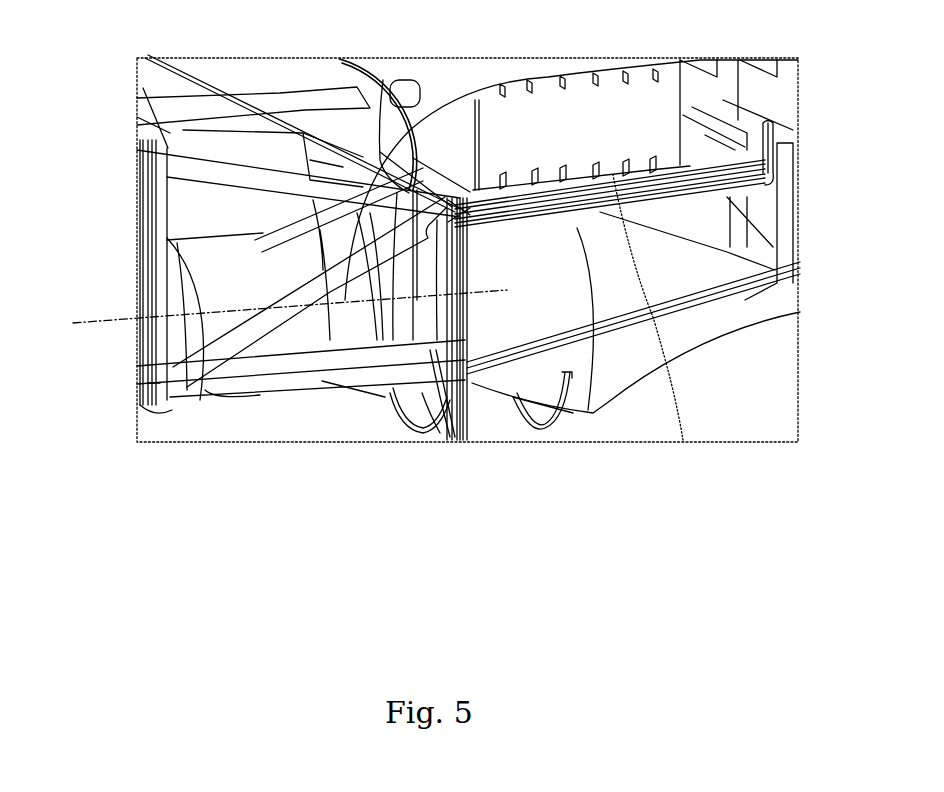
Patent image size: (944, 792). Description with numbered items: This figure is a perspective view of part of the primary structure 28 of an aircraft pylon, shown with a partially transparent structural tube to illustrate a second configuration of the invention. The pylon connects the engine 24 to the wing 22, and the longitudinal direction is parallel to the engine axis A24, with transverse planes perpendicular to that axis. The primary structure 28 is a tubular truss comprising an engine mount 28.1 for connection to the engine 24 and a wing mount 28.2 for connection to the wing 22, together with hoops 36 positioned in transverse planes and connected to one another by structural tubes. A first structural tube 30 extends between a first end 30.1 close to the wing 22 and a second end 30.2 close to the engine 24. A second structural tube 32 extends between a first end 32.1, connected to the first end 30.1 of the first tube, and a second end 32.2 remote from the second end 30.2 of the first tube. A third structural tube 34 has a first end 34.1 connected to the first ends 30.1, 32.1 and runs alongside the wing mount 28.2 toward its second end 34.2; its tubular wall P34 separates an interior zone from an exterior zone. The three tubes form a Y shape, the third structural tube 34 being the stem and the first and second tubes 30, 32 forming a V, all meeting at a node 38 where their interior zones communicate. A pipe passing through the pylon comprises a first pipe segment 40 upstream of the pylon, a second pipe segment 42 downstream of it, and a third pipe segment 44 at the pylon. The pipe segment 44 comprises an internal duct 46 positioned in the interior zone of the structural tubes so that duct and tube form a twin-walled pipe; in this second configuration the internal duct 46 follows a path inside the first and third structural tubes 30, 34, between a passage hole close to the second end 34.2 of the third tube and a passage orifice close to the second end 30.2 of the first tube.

The wing 22 is at (560, 80).
The engine 24 is at (287, 393).
The engine axis A24 is at (108, 320).
The primary structure 28 is at (186, 100).
The engine mount 28.1 is at (136, 374).
The wing mount 28.2 is at (650, 166).
The first structural tube 30 is at (298, 322).
The first end of the first structural tube 30.1 is at (413, 427).
The second end of the first structural tube 30.2 is at (190, 395).
The second structural tube 32 is at (352, 172).
The first end of the second structural tube 32.1 is at (437, 233).
The second end of the second structural tube 32.2 is at (165, 115).
The third structural tube 34 is at (682, 212).
The first end of the third structural tube 34.1 is at (480, 195).
The second end of the third structural tube 34.2 is at (790, 188).
The tubular wall P34 is at (683, 440).
The hoop 36 is at (135, 213).
The node 38 is at (465, 200).
The first pipe segment 40 is at (767, 140).
The second pipe segment 42 is at (170, 342).
The third pipe segment 44 is at (586, 222).
The internal duct 46 is at (538, 207).